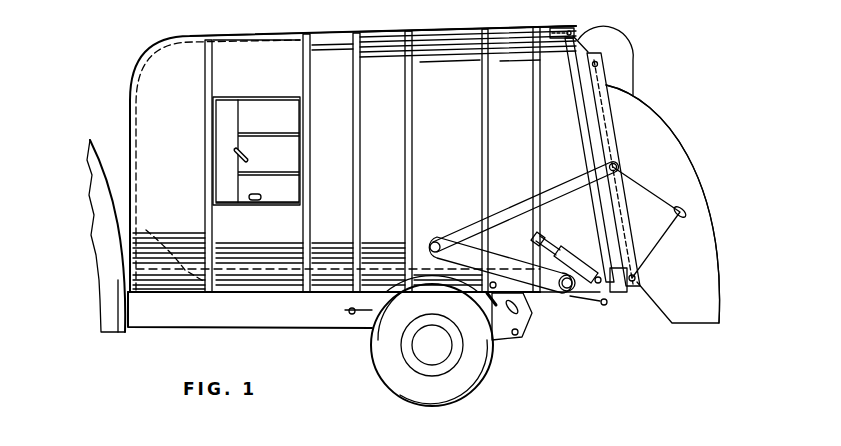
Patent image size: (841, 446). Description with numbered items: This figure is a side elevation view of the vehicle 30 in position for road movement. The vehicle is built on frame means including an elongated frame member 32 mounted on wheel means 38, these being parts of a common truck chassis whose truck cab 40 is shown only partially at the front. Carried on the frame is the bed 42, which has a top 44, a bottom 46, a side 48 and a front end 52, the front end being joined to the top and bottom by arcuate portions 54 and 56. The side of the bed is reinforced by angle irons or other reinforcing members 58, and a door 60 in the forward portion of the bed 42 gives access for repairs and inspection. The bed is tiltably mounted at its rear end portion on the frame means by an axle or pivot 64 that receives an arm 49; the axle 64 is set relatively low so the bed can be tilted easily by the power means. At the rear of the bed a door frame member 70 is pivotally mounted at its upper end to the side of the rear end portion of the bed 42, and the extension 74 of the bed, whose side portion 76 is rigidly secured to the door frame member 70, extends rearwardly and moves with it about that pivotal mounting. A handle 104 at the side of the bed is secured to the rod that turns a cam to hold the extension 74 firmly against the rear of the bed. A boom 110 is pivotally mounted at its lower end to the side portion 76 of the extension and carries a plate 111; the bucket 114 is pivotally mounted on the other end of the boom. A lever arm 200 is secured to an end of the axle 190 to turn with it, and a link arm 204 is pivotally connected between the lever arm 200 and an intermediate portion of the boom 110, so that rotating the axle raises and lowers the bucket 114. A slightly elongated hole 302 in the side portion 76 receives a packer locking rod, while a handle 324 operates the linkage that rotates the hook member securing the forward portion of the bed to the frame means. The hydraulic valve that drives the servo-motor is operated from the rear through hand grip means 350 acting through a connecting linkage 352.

The vehicle 30 is at (141, 57).
The elongated frame member 32 is at (250, 310).
The wheel means 38 is at (385, 358).
The truck cab 40 is at (102, 233).
The bed 42 is at (330, 58).
The top 44 is at (262, 42).
The bottom 46 is at (336, 269).
The side 48 is at (422, 60).
The arm 49 is at (548, 303).
The front end 52 is at (137, 162).
The arcuate portion 54 is at (140, 80).
The arcuate portion 56 is at (150, 230).
The reinforcing members 58 is at (300, 226).
The door 60 is at (268, 112).
The axle 64 is at (515, 335).
The door frame member 70 is at (590, 134).
The extension 74 is at (657, 132).
The side portion 76 is at (695, 156).
The handle 104 is at (544, 247).
The boom 110 is at (617, 170).
The plate 111 is at (657, 238).
The bucket 114 is at (622, 76).
The axle 190 is at (566, 292).
The lever arm 200 is at (462, 236).
The link arm 204 is at (470, 222).
The hole 302 is at (692, 192).
The handle 324 is at (490, 302).
The hand grip means 350 is at (640, 283).
The connecting linkage 352 is at (606, 305).